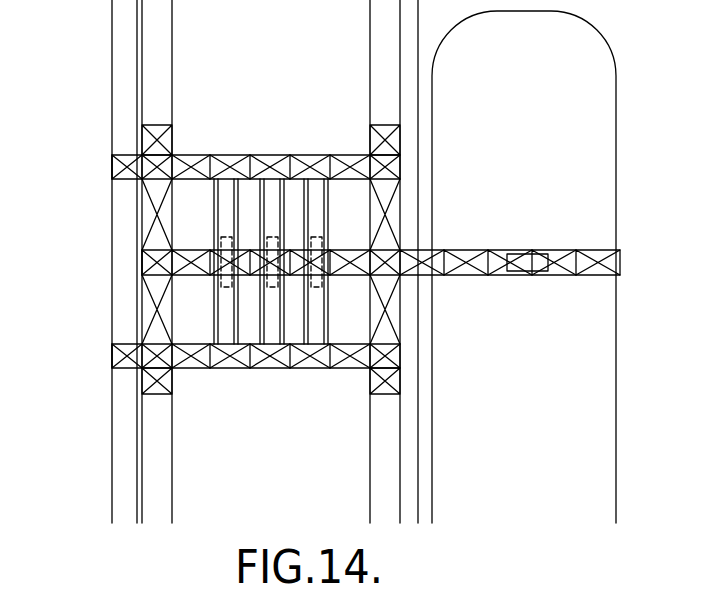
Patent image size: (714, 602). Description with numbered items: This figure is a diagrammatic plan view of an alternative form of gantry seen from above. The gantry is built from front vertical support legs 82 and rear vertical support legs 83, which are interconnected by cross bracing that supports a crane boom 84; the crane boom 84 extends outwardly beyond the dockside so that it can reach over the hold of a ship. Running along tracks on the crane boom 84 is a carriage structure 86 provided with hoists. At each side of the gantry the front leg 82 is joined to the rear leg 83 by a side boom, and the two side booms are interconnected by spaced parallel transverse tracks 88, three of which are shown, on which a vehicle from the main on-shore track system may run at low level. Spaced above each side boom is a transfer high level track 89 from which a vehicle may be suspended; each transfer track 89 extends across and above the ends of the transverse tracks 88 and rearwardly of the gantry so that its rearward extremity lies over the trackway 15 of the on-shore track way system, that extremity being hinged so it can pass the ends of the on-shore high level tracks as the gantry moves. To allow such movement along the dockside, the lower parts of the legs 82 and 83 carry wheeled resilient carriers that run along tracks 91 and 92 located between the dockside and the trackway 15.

The trackway 15 is at (112, 230).
The front vertical support legs 82 is at (393, 138).
The rear vertical support legs 83 is at (167, 139).
The crane boom 84 is at (541, 252).
The carriage structure 86 is at (528, 262).
The transverse tracks 88 is at (318, 198).
The transfer high level track 89 is at (255, 166).
The tracks 91 is at (382, 38).
The tracks 92 is at (152, 63).